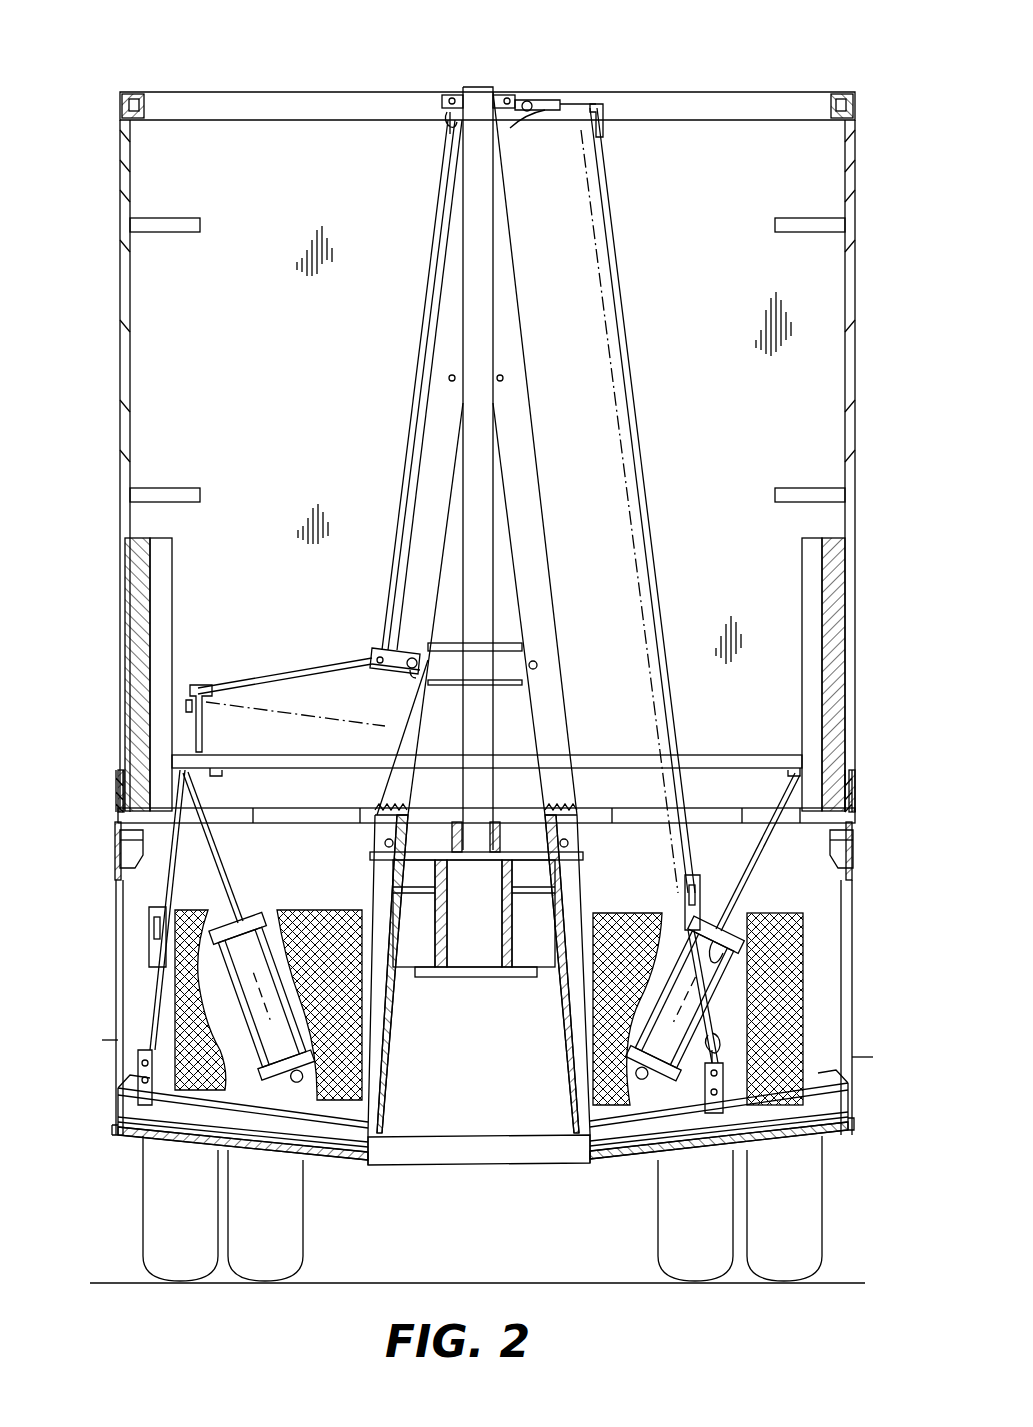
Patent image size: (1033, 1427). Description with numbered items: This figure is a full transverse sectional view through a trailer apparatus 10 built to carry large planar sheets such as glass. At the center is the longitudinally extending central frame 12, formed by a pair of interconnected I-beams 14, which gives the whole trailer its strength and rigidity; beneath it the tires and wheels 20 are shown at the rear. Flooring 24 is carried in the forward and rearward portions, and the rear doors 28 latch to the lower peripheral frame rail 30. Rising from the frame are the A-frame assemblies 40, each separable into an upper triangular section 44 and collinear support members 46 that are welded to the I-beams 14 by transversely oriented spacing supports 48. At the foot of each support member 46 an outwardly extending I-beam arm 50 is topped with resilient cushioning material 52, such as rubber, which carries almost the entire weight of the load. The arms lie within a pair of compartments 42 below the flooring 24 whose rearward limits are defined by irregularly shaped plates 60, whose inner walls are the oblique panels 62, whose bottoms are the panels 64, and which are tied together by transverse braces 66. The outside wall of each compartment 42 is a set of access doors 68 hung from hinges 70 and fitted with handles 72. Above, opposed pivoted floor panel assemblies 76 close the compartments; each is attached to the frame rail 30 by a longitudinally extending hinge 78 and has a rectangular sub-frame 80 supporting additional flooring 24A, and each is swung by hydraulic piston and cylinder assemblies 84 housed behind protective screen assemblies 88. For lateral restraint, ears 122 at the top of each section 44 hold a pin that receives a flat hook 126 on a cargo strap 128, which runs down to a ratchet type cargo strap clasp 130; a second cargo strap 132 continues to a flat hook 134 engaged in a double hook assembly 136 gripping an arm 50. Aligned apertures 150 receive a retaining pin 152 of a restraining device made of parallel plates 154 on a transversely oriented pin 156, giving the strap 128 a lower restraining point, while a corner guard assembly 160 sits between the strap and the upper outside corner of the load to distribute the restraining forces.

The trailer apparatus 10 is at (653, 72).
The central frame 12 is at (472, 982).
The I-beams 14 is at (490, 930).
The tires and wheels 20 is at (145, 1245).
The flooring 24 is at (297, 810).
The additional flooring 24A is at (124, 632).
The hinged and lockable doors 28 is at (253, 337).
The lower peripheral frame rail 30 is at (117, 840).
The A-frame assemblies 40 is at (378, 461).
The compartments 42 is at (135, 1000).
The upper triangular section 44 is at (546, 506).
The collinear support members 46 is at (372, 1007).
The spacing supports 48 is at (420, 895).
The I-beam arms 50 is at (345, 1133).
The resilient cushioning material 52 is at (200, 1095).
The rearward irregularly shaped plates 60 is at (336, 859).
The obliquely disposed panels 62 is at (378, 1124).
The bottom panels 64 is at (322, 1148).
The transverse braces 66 is at (512, 1154).
The access doors 68 is at (115, 960).
The hinges 70 is at (117, 862).
The handles 72 is at (112, 1040).
The pivoted floor panel assemblies 76 is at (112, 672).
The longitudinally extending hinge 78 is at (117, 790).
The rectangular sub-frame 80 is at (160, 586).
The hydraulic piston and cylinder assemblies 84 is at (253, 920).
The protective screen assemblies 88 is at (307, 930).
The ears 122 is at (448, 99).
The flat hook 126 is at (520, 118).
The cargo strap 128 is at (620, 234).
The ratchet type cargo strap clasp 130 is at (148, 928).
The second cargo strap 132 is at (715, 992).
The flat hook 134 is at (724, 1076).
The double hook assembly 136 is at (137, 1093).
The aligned apertures 150 is at (449, 378).
The retaining pin 152 is at (402, 648).
The parallel plates 154 is at (388, 678).
The transversely oriented pin 156 is at (384, 658).
The corner guard assembly 160 is at (604, 104).